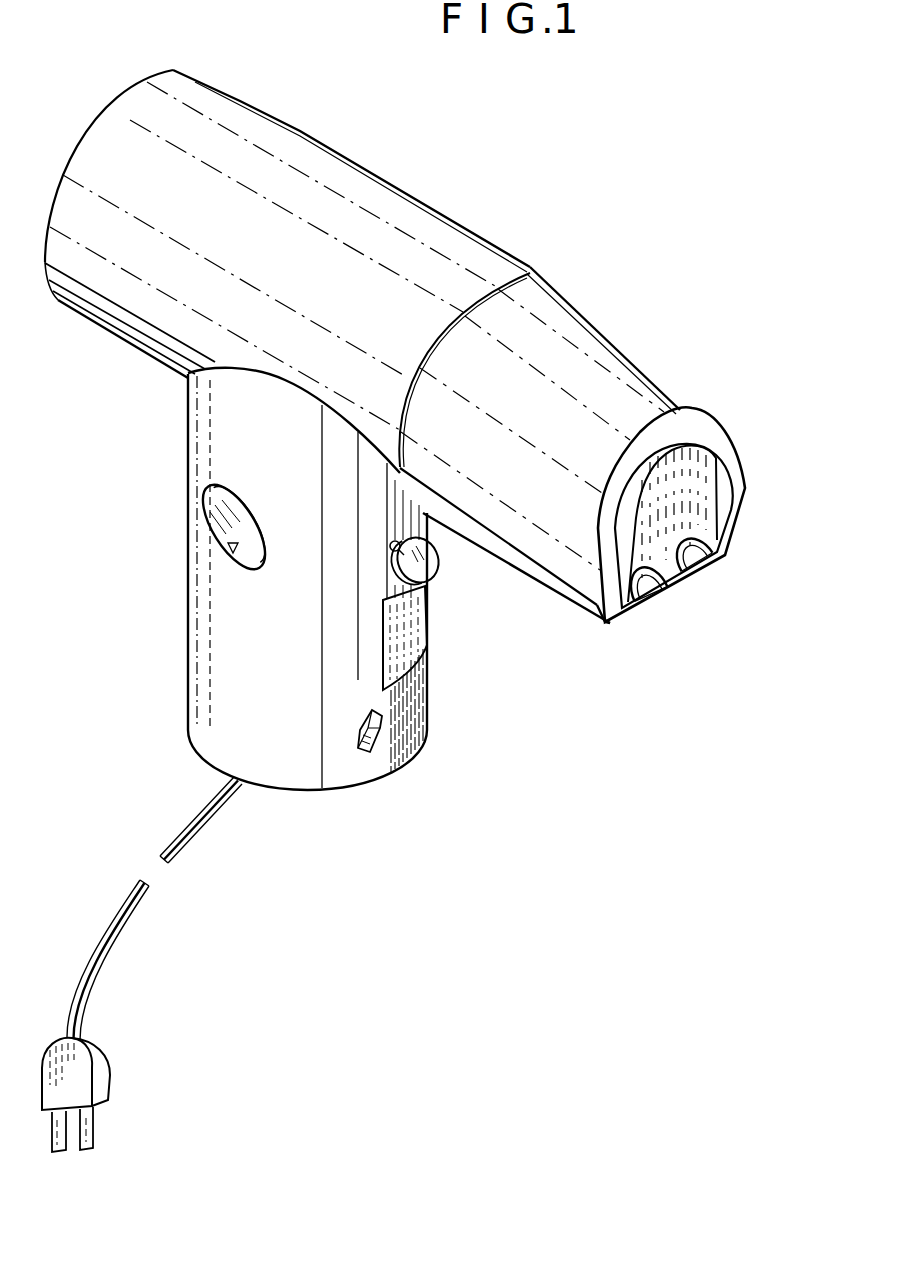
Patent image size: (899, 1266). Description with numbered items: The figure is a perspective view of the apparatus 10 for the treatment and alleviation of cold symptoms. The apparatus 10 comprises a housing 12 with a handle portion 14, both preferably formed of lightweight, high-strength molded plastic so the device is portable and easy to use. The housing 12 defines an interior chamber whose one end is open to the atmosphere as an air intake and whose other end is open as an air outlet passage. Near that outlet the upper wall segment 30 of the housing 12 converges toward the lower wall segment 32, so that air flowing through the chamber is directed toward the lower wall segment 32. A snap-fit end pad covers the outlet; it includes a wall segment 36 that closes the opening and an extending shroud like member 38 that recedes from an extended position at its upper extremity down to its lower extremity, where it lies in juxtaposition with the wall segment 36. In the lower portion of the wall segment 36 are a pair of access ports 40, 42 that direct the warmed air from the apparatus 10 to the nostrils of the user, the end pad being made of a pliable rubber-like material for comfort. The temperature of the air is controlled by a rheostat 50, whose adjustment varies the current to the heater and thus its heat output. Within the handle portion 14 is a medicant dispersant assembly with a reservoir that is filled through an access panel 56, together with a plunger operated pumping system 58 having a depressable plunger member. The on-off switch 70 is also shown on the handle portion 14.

The apparatus 10 is at (614, 289).
The housing 12 is at (477, 237).
The handle portion 14 is at (187, 647).
The upper wall segment 30 is at (667, 393).
The lower wall segment 32 is at (563, 605).
The wall segment 36 is at (710, 473).
The shroud like member 38 is at (732, 448).
The access port 40 is at (642, 582).
The access port 42 is at (688, 552).
The rheostat 50 is at (247, 508).
The access panel 56 is at (420, 638).
The plunger operated pumping system 58 is at (425, 572).
The on-off switch 70 is at (384, 738).